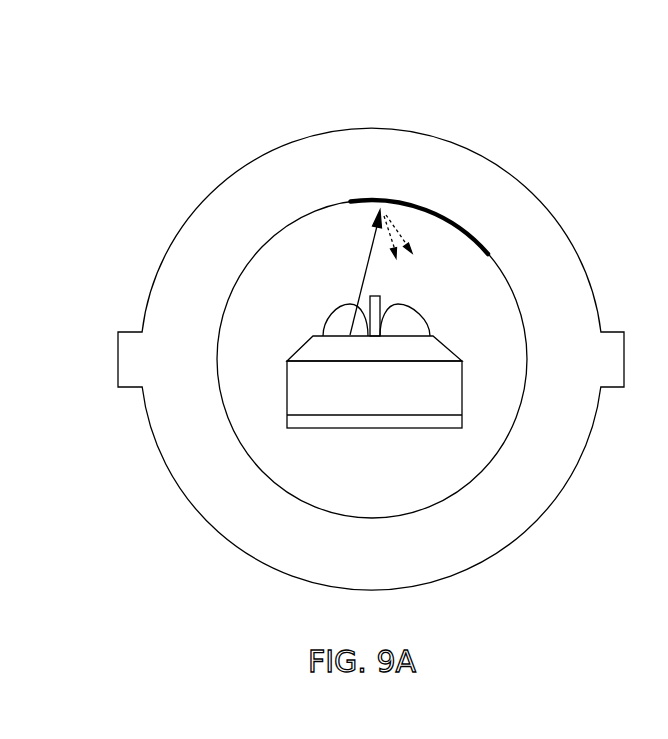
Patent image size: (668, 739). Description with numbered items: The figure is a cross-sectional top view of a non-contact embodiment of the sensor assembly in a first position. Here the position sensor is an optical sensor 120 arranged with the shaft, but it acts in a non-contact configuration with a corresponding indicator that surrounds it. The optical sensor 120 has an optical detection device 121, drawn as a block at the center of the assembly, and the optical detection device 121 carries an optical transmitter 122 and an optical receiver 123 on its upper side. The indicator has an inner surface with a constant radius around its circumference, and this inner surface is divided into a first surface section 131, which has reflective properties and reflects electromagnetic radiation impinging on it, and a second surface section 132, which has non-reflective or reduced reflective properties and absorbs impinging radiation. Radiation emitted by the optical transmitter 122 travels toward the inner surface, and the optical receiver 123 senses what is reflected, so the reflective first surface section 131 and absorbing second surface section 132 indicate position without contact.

The optical sensor 120 is at (487, 350).
The optical detection device 121 is at (310, 352).
The optical transmitter 122 is at (342, 315).
The optical receiver 123 is at (408, 313).
The first surface section 131 is at (503, 272).
The second surface section 132 is at (465, 230).